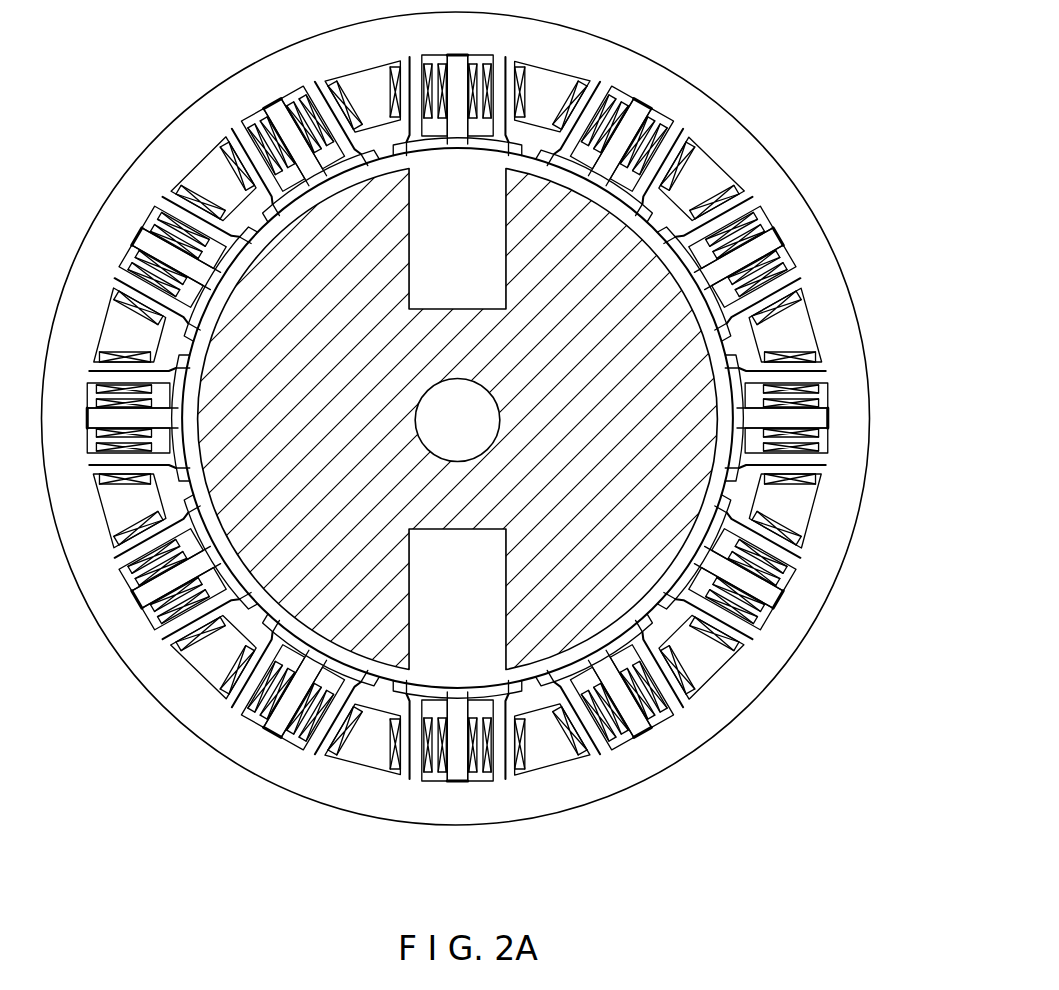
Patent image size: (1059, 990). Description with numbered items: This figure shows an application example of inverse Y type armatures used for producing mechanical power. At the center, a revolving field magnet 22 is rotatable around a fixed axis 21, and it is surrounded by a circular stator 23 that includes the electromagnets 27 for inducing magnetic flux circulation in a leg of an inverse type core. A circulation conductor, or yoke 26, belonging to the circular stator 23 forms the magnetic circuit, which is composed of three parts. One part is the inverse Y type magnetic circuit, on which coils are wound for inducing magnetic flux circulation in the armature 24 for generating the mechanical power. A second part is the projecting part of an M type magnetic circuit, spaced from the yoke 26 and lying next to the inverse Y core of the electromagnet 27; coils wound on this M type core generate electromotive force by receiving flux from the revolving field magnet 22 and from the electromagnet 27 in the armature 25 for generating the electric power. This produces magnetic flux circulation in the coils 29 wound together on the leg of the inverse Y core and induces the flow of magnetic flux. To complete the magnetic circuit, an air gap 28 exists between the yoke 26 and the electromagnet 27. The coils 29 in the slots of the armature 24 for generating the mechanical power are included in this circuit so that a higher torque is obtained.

The fixed axis 21 is at (458, 393).
The revolving field magnet 22 is at (625, 240).
The circular stator 23 is at (505, 408).
The armature for generating the mechanical power 24 is at (766, 507).
The armature for generating the electric power 25 is at (637, 120).
The circulation conductor (yoke) 26 is at (847, 325).
The electromagnet for inducing magnetic flux circulation 27 is at (747, 497).
The air gap 28 is at (767, 250).
The coils 29 is at (817, 390).